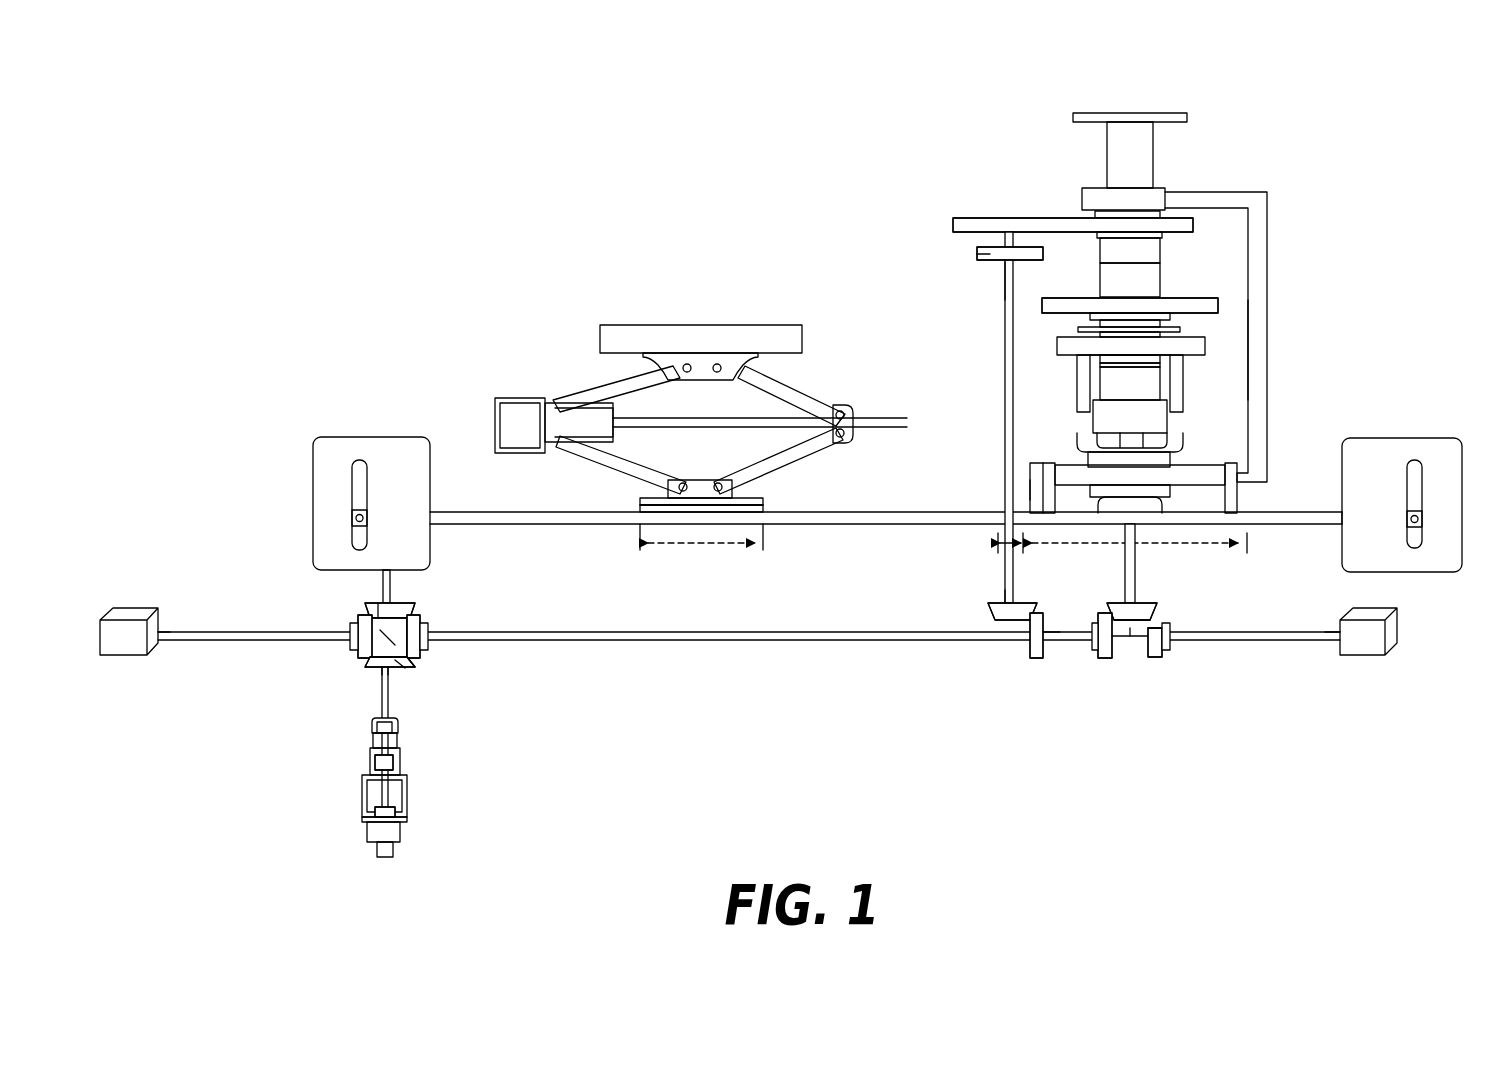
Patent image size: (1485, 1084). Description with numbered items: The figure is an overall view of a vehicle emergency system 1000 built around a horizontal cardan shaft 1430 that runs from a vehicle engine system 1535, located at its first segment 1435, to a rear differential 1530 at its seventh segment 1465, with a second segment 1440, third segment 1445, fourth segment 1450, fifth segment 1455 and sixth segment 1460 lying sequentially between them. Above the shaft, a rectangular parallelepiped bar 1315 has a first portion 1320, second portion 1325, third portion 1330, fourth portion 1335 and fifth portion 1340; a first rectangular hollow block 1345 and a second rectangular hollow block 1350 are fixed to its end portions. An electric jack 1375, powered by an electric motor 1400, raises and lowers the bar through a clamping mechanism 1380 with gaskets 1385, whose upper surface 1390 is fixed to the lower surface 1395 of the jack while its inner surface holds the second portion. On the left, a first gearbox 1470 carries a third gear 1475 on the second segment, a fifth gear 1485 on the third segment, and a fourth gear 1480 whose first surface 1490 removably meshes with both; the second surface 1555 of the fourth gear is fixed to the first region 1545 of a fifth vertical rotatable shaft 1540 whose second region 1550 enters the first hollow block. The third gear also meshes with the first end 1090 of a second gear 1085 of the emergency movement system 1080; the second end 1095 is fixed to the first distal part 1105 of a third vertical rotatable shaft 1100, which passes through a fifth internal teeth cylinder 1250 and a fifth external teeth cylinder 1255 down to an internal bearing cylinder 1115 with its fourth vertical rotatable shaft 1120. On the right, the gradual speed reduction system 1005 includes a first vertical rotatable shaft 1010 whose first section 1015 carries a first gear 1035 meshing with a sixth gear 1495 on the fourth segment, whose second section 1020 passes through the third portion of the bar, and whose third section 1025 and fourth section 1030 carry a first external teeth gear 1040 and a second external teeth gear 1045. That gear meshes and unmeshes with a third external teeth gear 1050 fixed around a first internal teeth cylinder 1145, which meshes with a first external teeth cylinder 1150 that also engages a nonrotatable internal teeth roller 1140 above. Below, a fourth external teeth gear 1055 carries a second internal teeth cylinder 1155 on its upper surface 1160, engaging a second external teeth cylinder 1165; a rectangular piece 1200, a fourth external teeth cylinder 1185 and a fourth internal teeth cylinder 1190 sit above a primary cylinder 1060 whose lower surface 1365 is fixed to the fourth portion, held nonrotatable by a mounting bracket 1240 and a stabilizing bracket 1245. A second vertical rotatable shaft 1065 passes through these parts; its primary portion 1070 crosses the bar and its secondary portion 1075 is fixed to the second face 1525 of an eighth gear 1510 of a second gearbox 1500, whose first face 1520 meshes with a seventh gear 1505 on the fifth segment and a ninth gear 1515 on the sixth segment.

The vehicle emergency system 1000 is at (1426, 140).
The gradual speed reduction system 1005 is at (1270, 140).
The first vertical rotatable shaft 1010 is at (1000, 330).
The first section 1015 is at (996, 622).
The second section 1020 is at (1001, 506).
The third section 1025 is at (1000, 268).
The fourth section 1030 is at (990, 243).
The first gear 1035 is at (994, 628).
The first external teeth gear 1040 is at (975, 255).
The second external teeth gear 1045 is at (953, 225).
The third external teeth gear 1050 is at (1202, 222).
The fourth external teeth gear 1055 is at (1224, 308).
The primary cylinder 1060 is at (1182, 498).
The second vertical rotatable shaft 1065 is at (1125, 440).
The primary portion 1070 is at (1144, 533).
The secondary portion 1075 is at (1154, 600).
The emergency movement system 1080 is at (450, 806).
The second gear 1085 is at (370, 668).
The first end 1090 is at (375, 630).
The second end 1095 is at (372, 672).
The third vertical rotatable shaft 1100 is at (381, 705).
The first distal part 1105 is at (396, 680).
The internal bearing cylinder 1115 is at (365, 834).
The fourth vertical rotatable shaft 1120 is at (397, 851).
The internal teeth roller 1140 is at (1070, 196).
The first internal teeth cylinder 1145 is at (1168, 236).
The first external teeth cylinder 1150 is at (1092, 212).
The second internal teeth cylinder 1155 is at (1168, 270).
The upper surface 1160 is at (1218, 302).
The second external teeth cylinder 1165 is at (1168, 252).
The fourth external teeth cylinder 1185 is at (1165, 392).
The fourth internal teeth cylinder 1190 is at (1168, 420).
The rectangular piece 1200 is at (1210, 340).
The mounting bracket 1240 is at (1077, 466).
The stabilizing bracket 1245 is at (1272, 353).
The fifth internal teeth cylinder 1250 is at (400, 742).
The fifth external teeth cylinder 1255 is at (402, 763).
The rectangular parallelepiped bar 1315 is at (590, 537).
The first portion 1320 is at (446, 528).
The second portion 1325 is at (702, 558).
The third portion 1330 is at (1005, 558).
The fourth portion 1335 is at (1100, 548).
The fifth portion 1340 is at (1333, 540).
The first rectangular hollow block 1345 is at (378, 430).
The second rectangular hollow block 1350 is at (1451, 432).
The lower surface 1365 is at (1092, 511).
The electric jack 1375 is at (690, 318).
The clamping mechanism 1380 is at (630, 496).
The gaskets 1385 is at (769, 510).
The upper surface 1390 is at (696, 495).
The lower surface 1395 is at (713, 487).
The electric motor 1400 is at (522, 396).
The cardan shaft 1430 is at (200, 655).
The first segment 1435 is at (160, 655).
The second segment 1440 is at (325, 633).
The third segment 1445 is at (428, 648).
The fourth segment 1450 is at (1020, 650).
The fifth segment 1455 is at (1098, 664).
The sixth segment 1460 is at (1174, 656).
The seventh segment 1465 is at (1332, 650).
The first gearbox 1470 is at (462, 613).
The third gear 1475 is at (350, 615).
The fourth gear 1480 is at (422, 616).
The fifth gear 1485 is at (415, 665).
The first surface 1490 is at (405, 672).
The sixth gear 1495 is at (1040, 662).
The second gearbox 1500 is at (1138, 690).
The seventh gear 1505 is at (1109, 662).
The eighth gear 1510 is at (1151, 652).
The ninth gear 1515 is at (1138, 642).
The first face 1520 is at (1151, 624).
The second face 1525 is at (1107, 603).
The rear differential 1530 is at (1383, 668).
The vehicle engine system 1535 is at (133, 605).
The fifth vertical rotatable shaft 1540 is at (370, 580).
The first region 1545 is at (394, 600).
The second region 1550 is at (389, 590).
The second surface 1555 is at (406, 602).